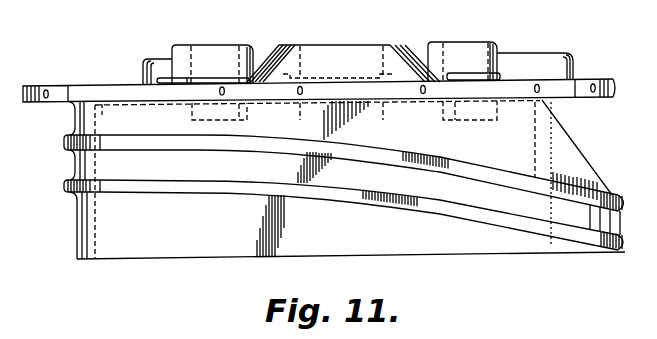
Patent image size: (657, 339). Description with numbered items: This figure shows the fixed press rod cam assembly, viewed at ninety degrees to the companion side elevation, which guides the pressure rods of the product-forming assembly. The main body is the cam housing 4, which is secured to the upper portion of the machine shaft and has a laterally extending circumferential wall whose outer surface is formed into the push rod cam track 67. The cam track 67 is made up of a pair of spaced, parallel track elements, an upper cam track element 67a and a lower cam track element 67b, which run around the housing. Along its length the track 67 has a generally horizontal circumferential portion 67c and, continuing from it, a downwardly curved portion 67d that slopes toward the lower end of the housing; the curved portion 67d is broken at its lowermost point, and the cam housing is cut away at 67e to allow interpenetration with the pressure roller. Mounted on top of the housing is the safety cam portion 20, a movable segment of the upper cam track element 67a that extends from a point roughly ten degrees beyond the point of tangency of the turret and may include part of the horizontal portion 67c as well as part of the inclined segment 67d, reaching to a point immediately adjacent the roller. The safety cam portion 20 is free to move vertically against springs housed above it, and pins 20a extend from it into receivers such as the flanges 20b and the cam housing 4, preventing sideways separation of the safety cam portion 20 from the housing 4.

The cam housing 4 is at (90, 84).
The safety cam portion 20 is at (524, 42).
The pins 20a is at (193, 116).
The flanges 20b is at (250, 113).
The cam track 67 is at (67, 167).
The upper cam track element 67a is at (63, 141).
The lower cam track element 67b is at (64, 191).
The horizontal circumferential portion 67c is at (164, 170).
The downwardly curved portion 67d is at (462, 196).
The cut-away portion 67e is at (588, 168).